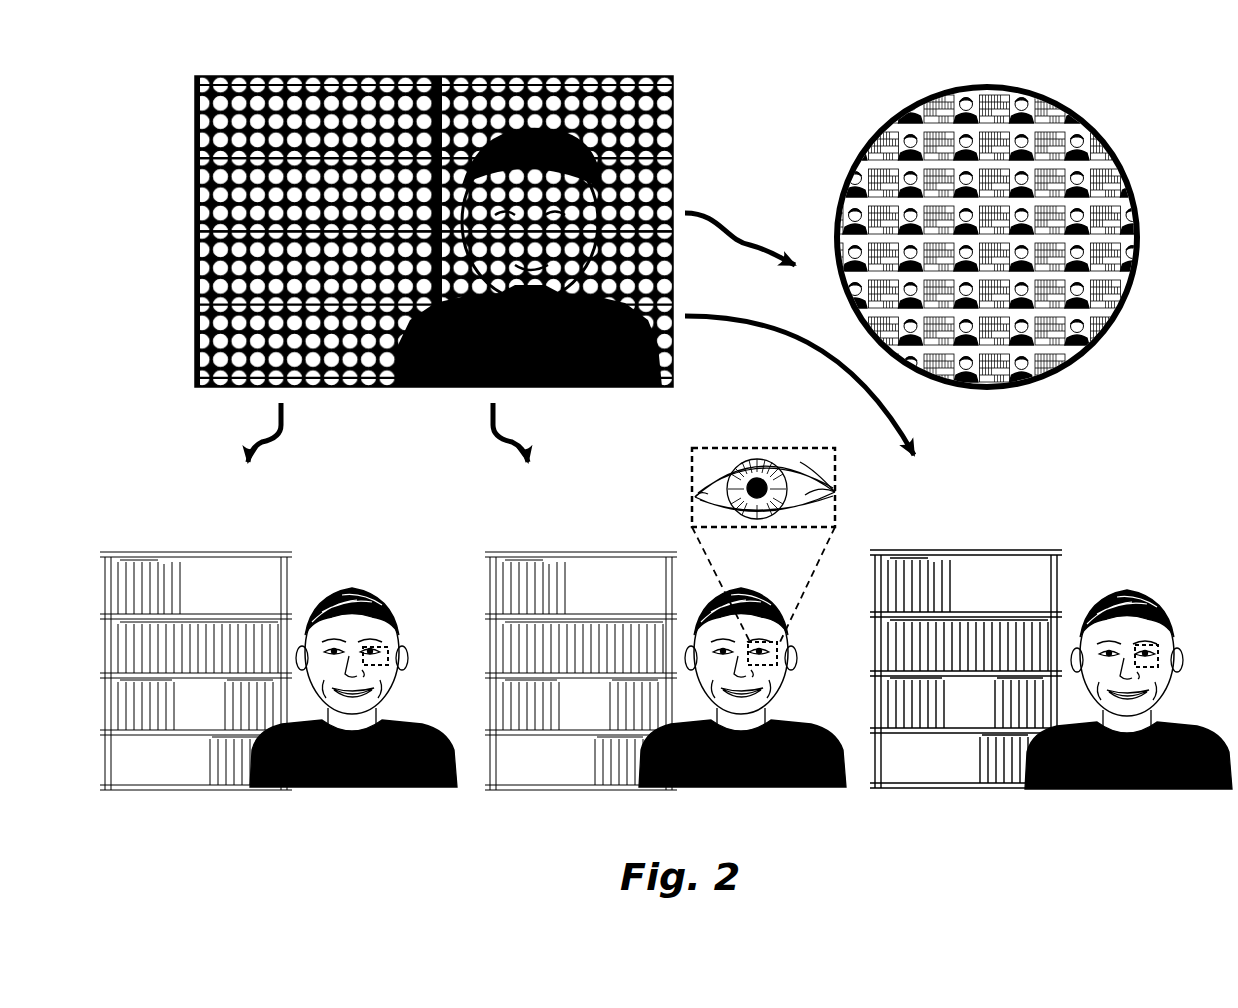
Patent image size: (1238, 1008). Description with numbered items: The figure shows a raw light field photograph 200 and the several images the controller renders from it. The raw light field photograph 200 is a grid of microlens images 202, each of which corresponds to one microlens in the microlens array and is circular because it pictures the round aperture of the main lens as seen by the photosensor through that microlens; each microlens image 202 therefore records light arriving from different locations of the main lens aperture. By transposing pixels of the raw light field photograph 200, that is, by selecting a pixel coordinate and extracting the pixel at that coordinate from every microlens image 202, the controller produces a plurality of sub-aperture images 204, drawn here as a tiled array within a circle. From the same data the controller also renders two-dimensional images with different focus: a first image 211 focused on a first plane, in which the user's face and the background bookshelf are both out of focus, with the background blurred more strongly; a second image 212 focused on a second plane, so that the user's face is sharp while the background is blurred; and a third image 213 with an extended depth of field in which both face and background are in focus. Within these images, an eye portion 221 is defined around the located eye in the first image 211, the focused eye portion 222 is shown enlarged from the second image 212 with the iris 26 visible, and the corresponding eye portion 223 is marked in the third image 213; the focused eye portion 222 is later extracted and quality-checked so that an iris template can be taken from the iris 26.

The raw light field photograph 200 is at (175, 108).
The microlens images 202 is at (195, 192).
The sub-aperture images 204 is at (883, 220).
The first image 211 is at (278, 636).
The second image 212 is at (686, 597).
The third image 213 is at (1051, 635).
The iris 26 is at (756, 476).
The eye portion 221 is at (390, 652).
The focused eye portion 222 is at (769, 465).
The eye portion 223 is at (1158, 652).